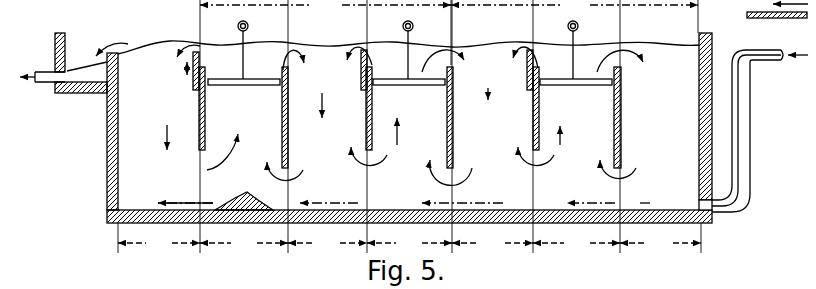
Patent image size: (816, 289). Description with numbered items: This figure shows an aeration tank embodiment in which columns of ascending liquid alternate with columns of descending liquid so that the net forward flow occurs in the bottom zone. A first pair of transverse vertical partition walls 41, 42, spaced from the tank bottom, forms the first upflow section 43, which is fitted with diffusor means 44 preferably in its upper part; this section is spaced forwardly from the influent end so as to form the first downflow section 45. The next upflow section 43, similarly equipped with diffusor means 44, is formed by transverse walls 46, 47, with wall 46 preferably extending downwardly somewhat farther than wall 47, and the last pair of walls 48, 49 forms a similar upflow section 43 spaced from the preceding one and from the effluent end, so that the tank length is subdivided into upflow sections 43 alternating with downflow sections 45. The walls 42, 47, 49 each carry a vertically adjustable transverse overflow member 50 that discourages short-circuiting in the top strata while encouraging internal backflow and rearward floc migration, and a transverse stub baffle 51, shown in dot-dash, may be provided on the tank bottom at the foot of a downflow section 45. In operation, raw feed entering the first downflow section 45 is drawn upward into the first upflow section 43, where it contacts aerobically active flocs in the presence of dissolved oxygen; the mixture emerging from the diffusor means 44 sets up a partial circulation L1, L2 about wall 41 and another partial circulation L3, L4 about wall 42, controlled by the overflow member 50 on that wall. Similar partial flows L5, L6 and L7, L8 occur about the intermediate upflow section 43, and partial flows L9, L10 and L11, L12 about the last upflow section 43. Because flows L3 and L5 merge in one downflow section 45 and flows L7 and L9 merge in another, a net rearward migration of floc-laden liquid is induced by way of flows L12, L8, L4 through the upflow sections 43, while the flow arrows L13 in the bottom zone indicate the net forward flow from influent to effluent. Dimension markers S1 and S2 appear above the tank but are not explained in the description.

The transverse vertical partition wall 41 is at (622, 105).
The transverse vertical partition wall 42 is at (533, 106).
The upflow section 43 is at (410, 244).
The diffusor means 44 is at (583, 79).
The downflow section 45 is at (409, 244).
The transverse wall 46 is at (455, 107).
The transverse wall 47 is at (366, 106).
The transverse wall 48 is at (286, 108).
The transverse wall 49 is at (199, 100).
The transverse overflow member 50 is at (201, 63).
The transverse stub baffle 51 is at (250, 198).
The partial circulation flow L1 is at (637, 44).
The partial circulation flow L2 is at (627, 168).
The partial circulation flow L3 is at (527, 44).
The partial circulation flow L4 is at (548, 172).
The partial circulation flow L5 is at (450, 44).
The partial circulation flow L6 is at (472, 172).
The partial circulation flow L7 is at (350, 44).
The partial circulation flow L8 is at (377, 170).
The partial circulation flow L9 is at (290, 44).
The partial circulation flow L10 is at (305, 173).
The partial circulation flow L11 is at (190, 47).
The partial circulation flow L12 is at (209, 169).
The net forward flow arrows L13 is at (177, 203).
The section length S1 is at (574, 8).
The section length S2 is at (325, 32).